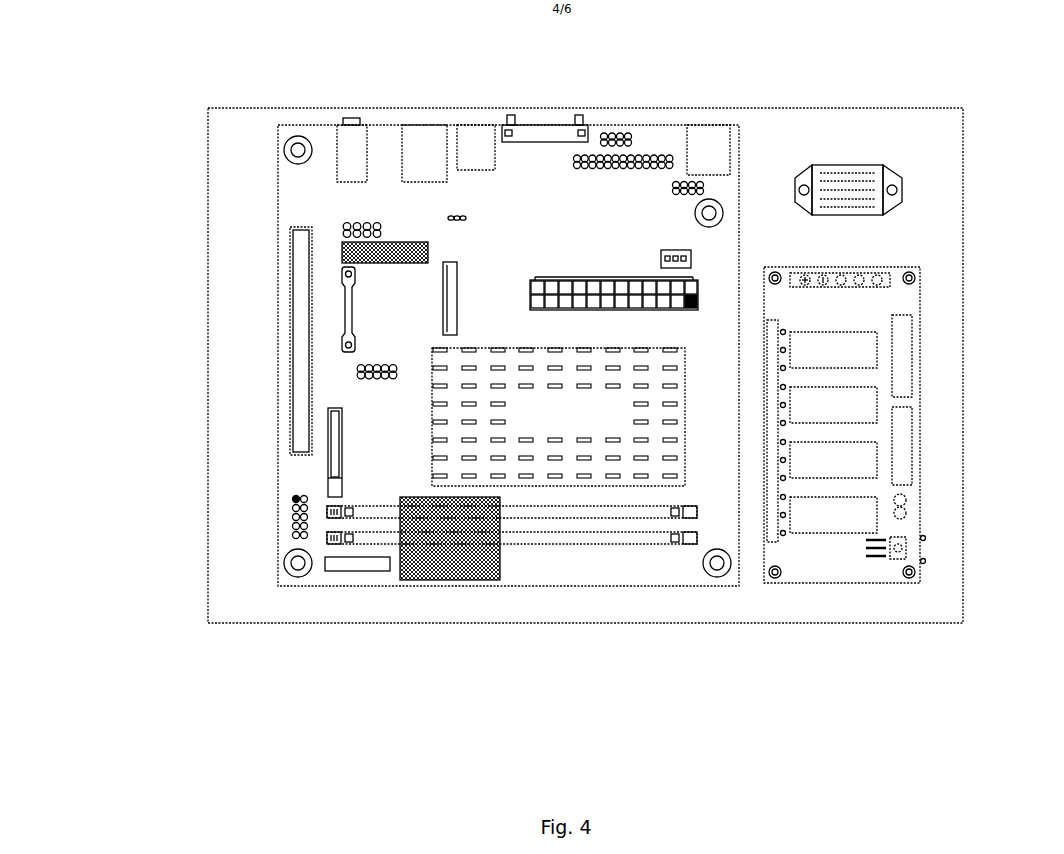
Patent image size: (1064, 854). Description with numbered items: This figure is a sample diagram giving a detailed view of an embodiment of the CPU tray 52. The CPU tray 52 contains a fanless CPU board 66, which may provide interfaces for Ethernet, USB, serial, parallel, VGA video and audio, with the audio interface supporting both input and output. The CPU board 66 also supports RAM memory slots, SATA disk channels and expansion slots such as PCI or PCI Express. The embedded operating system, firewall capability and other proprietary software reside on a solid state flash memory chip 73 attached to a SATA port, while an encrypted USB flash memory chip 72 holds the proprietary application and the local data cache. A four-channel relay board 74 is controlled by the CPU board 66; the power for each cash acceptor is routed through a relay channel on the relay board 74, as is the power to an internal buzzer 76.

The CPU tray 52 is at (775, 129).
The fanless CPU board 66 is at (491, 268).
The encrypted USB flash memory chip 72 is at (346, 249).
The solid state flash memory chip 73 is at (437, 545).
The 4 channel relay board 74 is at (871, 308).
The internal buzzer 76 is at (904, 187).